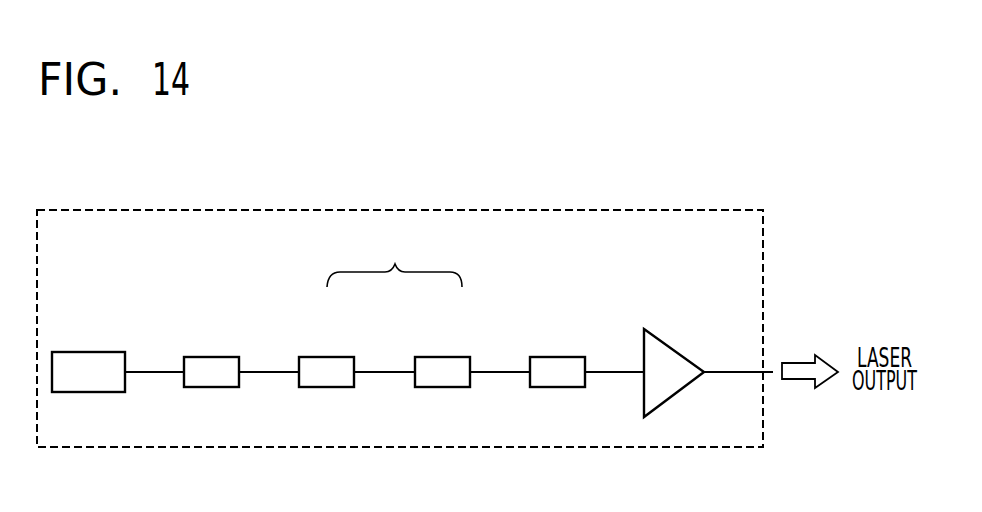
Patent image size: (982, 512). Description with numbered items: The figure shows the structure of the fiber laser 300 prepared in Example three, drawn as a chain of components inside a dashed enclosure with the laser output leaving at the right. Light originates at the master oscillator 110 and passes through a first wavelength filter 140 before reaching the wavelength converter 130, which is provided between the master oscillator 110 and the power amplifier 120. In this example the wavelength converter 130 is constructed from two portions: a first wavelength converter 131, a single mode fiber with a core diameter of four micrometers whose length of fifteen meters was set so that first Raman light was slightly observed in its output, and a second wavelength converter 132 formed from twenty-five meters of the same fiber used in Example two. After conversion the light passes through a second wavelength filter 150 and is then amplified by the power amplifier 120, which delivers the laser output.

The fiber laser 300 is at (768, 266).
The master oscillator 110 is at (90, 352).
The first wavelength filter 140 is at (208, 357).
The wavelength converter 130 is at (384, 307).
The first wavelength converter 131 is at (340, 357).
The second wavelength converter 132 is at (430, 357).
The second wavelength filter 150 is at (550, 357).
The power amplifier 120 is at (679, 352).